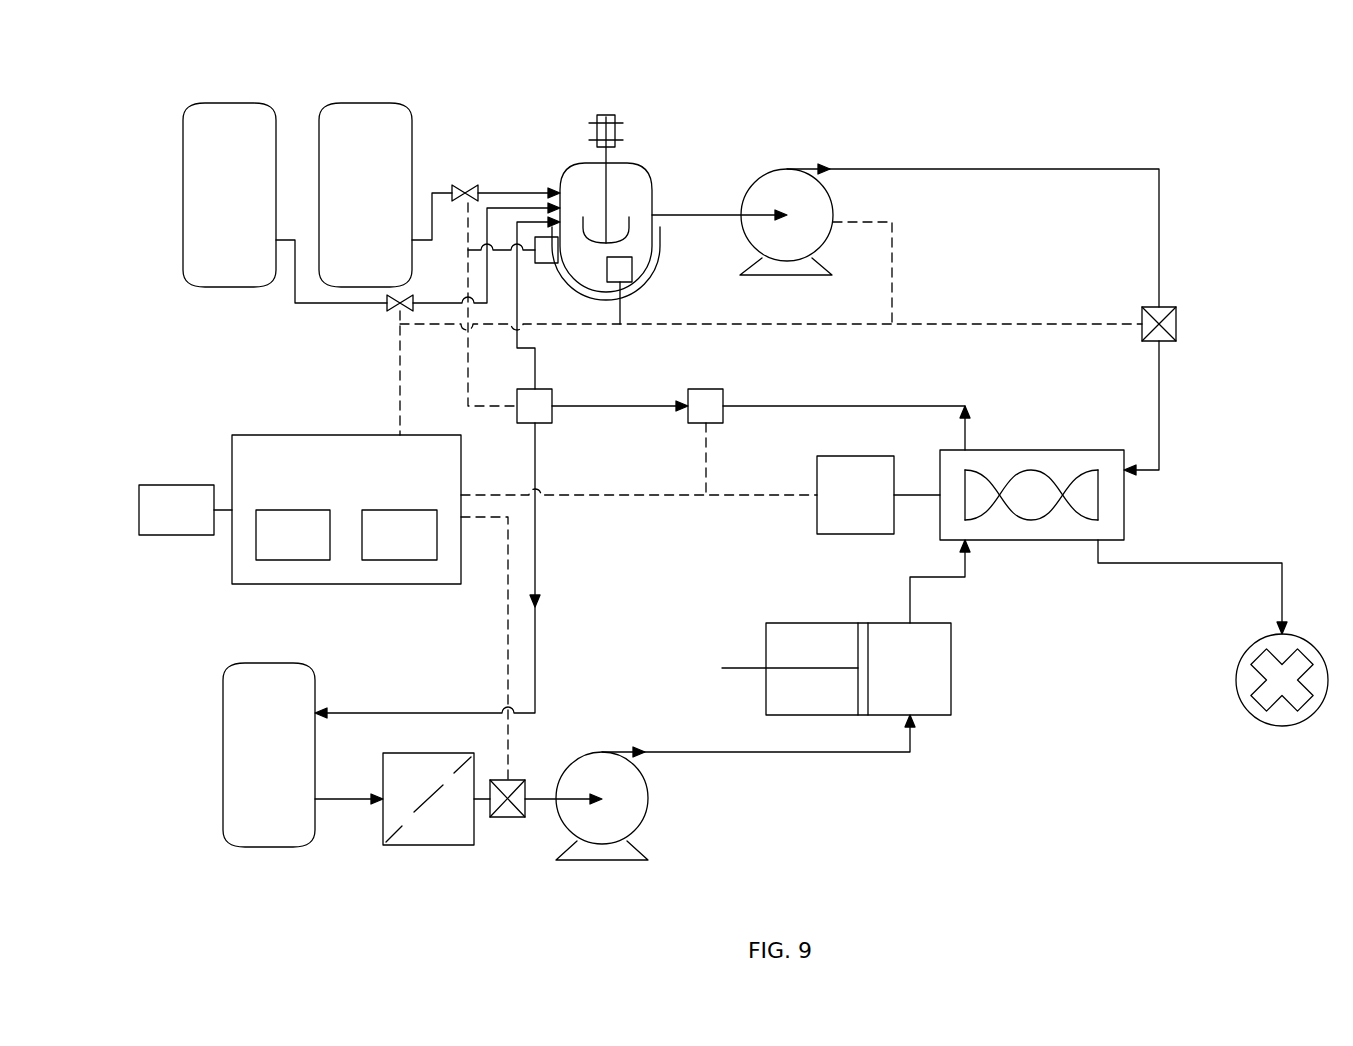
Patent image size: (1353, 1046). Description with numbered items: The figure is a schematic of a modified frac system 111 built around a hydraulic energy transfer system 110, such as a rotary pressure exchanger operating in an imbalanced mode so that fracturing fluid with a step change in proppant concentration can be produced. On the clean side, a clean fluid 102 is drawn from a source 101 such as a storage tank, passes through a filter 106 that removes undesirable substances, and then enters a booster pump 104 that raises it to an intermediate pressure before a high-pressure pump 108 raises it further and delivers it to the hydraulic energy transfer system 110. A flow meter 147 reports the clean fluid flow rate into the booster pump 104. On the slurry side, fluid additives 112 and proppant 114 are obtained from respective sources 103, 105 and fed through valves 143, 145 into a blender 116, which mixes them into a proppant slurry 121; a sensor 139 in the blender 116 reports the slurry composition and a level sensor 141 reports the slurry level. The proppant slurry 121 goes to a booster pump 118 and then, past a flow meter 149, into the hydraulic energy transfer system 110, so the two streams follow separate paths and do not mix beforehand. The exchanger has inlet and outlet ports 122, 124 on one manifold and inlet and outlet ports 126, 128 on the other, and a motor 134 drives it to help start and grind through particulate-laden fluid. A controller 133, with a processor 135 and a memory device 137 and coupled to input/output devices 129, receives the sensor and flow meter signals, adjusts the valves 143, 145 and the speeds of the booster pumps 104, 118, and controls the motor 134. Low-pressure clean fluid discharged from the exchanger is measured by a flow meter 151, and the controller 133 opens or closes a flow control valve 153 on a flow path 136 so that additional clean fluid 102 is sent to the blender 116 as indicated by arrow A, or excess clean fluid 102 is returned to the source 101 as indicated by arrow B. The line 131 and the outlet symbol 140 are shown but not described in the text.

The source 101 is at (242, 663).
The clean fluid 102 is at (249, 767).
The source 103 is at (268, 106).
The booster pump 104 is at (648, 812).
The source 105 is at (404, 106).
The filter 106 is at (392, 845).
The high-pressure pump 108 is at (889, 680).
The hydraulic energy transfer system 110 is at (1090, 450).
The frac system 111 is at (1247, 166).
The fluid additives 112 is at (210, 207).
The proppant 114 is at (346, 207).
The blender 116 is at (620, 207).
The booster pump 118 is at (757, 180).
The proppant slurry 121 is at (604, 208).
The inlet port 122 is at (965, 570).
The outlet port 124 is at (965, 435).
The inlet port 126 is at (1159, 450).
The outlet port 128 is at (1197, 563).
The input/output devices 129 is at (156, 522).
The supply line 131 is at (852, 405).
The controller 133 is at (325, 472).
The motor 134 is at (835, 507).
The processor 135 is at (273, 547).
The flow path 136 is at (535, 575).
The memory device 137 is at (380, 547).
The sensor 139 is at (632, 265).
The outlet 140 is at (1237, 685).
The level sensor 141 is at (548, 264).
The valve 143 is at (388, 304).
The valve 145 is at (466, 185).
The flow meter 147 is at (513, 817).
The flow meter 149 is at (1142, 318).
The flow meter 151 is at (724, 420).
The flow control valve 153 is at (554, 395).
The arrow A is at (557, 447).
The arrow B is at (557, 635).